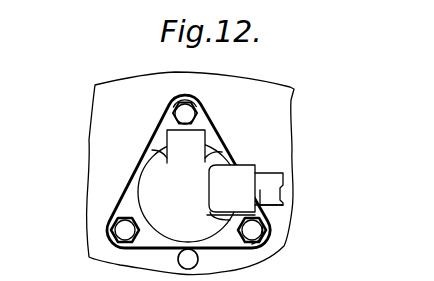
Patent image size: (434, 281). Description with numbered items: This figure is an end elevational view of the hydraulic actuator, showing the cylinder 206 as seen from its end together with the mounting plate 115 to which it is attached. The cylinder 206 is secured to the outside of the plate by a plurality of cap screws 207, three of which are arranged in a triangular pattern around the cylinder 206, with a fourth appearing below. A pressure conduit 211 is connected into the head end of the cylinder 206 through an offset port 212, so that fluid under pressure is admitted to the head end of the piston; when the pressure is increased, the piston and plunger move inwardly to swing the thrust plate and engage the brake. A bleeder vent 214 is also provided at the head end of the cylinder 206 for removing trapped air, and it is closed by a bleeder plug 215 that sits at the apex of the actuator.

The mounting plate 115 is at (271, 115).
The cylinder 206 is at (147, 179).
The cap screws 207 is at (200, 105).
The pressure conduit 211 is at (286, 219).
The offset port 212 is at (262, 168).
The bleeder vent 214 is at (177, 137).
The bleeder plug 215 is at (169, 124).